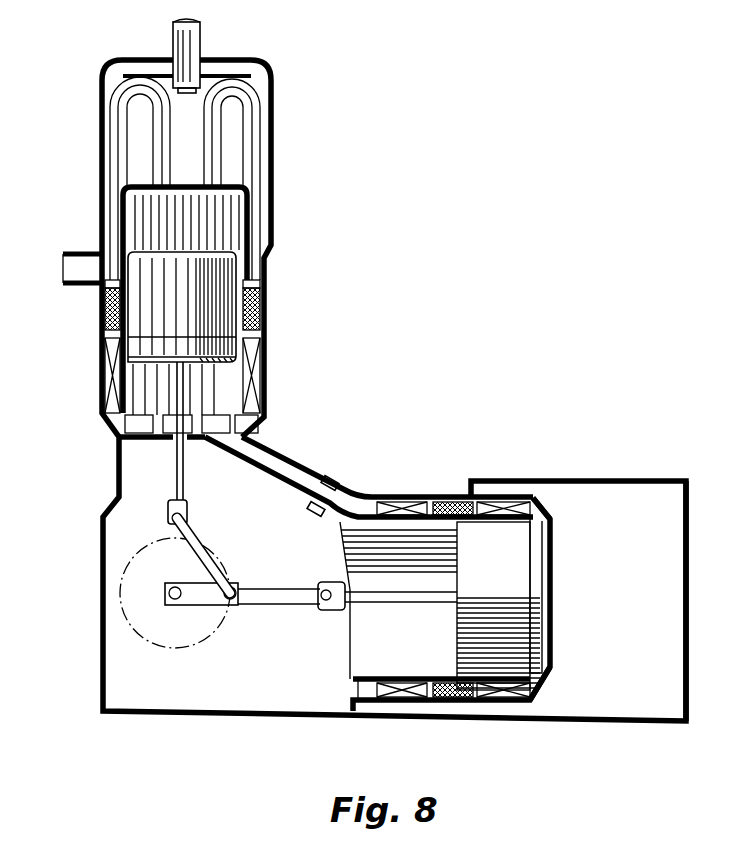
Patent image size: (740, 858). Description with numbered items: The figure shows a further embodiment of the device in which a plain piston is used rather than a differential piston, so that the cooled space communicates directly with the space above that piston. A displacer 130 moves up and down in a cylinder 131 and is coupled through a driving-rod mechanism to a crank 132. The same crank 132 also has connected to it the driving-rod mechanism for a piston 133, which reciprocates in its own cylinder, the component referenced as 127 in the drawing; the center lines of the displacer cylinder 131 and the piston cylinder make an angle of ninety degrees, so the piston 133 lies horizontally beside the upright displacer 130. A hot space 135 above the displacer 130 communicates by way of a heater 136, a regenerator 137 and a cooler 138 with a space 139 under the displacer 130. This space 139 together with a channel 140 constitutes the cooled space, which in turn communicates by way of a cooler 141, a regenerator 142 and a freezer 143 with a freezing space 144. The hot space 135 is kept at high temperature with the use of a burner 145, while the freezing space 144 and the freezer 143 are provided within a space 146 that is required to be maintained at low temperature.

The compressor cylinder 127 is at (426, 498).
The displacer 130 is at (133, 346).
The cylinder 131 is at (112, 400).
The crank 132 is at (176, 600).
The piston 133 is at (530, 700).
The hot space 135 is at (122, 196).
The heater 136 is at (112, 117).
The regenerator 137 is at (104, 312).
The cooler 138 is at (104, 418).
The space under the displacer 139 is at (130, 388).
The channel 140 is at (290, 476).
The cooler 141 is at (406, 692).
The regenerator 142 is at (455, 692).
The freezer 143 is at (497, 692).
The freezing space 144 is at (552, 675).
The burner 145 is at (176, 33).
The space 146 is at (640, 688).